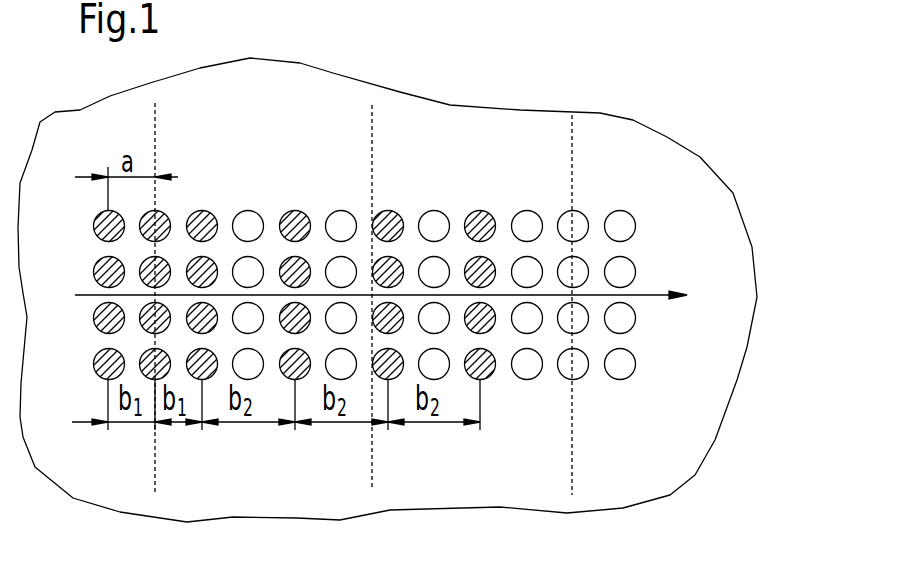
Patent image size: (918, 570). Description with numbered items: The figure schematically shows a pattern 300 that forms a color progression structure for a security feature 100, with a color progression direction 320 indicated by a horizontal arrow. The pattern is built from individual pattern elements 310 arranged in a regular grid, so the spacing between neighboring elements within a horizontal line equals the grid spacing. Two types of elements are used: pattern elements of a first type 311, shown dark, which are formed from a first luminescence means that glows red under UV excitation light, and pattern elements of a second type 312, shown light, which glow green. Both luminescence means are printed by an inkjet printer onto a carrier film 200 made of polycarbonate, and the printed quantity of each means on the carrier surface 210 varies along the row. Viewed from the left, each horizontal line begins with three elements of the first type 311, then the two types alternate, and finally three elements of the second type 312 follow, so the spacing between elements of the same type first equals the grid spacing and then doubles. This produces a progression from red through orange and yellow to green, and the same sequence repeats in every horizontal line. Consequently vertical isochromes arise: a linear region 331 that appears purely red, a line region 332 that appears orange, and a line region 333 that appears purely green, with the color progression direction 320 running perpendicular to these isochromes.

The security feature 100 is at (428, 224).
The pattern 300 is at (428, 224).
The carrier film 200 is at (414, 290).
The carrier surface 210 is at (725, 240).
The pattern elements 310 is at (274, 224).
The pattern elements of a first type 311 is at (203, 210).
The pattern elements of a second type 312 is at (255, 208).
The color progression direction 320 is at (643, 297).
The linear region (isochrome) 331 is at (155, 448).
The line region (isochrome) 332 is at (373, 455).
The line region (isochrome) 333 is at (572, 438).